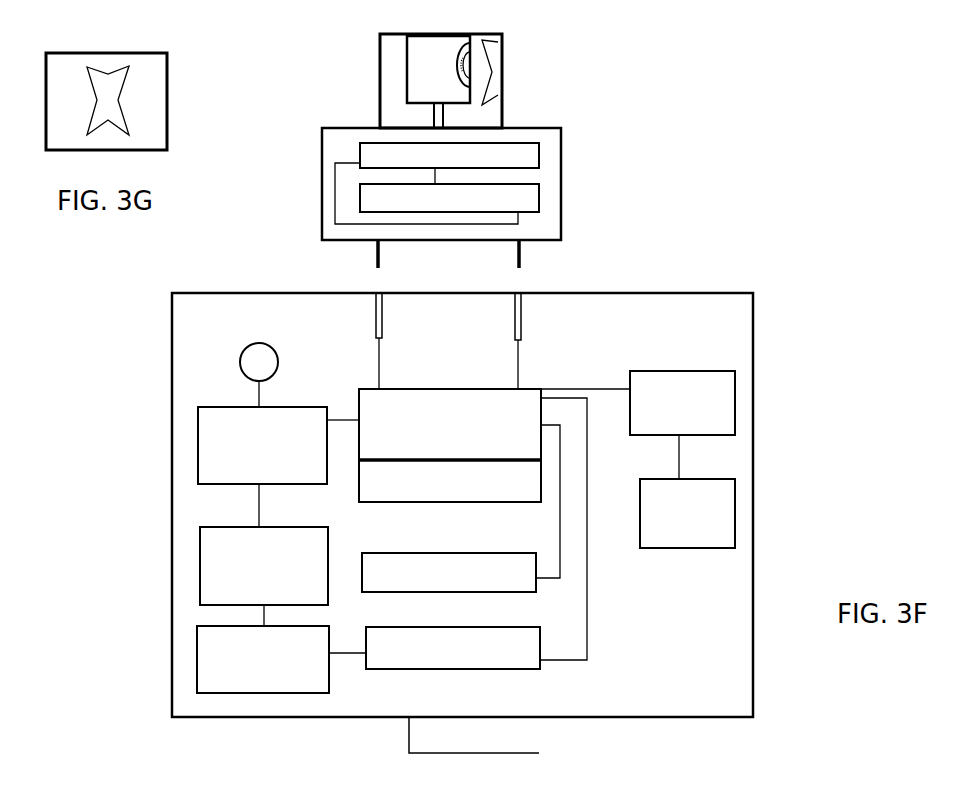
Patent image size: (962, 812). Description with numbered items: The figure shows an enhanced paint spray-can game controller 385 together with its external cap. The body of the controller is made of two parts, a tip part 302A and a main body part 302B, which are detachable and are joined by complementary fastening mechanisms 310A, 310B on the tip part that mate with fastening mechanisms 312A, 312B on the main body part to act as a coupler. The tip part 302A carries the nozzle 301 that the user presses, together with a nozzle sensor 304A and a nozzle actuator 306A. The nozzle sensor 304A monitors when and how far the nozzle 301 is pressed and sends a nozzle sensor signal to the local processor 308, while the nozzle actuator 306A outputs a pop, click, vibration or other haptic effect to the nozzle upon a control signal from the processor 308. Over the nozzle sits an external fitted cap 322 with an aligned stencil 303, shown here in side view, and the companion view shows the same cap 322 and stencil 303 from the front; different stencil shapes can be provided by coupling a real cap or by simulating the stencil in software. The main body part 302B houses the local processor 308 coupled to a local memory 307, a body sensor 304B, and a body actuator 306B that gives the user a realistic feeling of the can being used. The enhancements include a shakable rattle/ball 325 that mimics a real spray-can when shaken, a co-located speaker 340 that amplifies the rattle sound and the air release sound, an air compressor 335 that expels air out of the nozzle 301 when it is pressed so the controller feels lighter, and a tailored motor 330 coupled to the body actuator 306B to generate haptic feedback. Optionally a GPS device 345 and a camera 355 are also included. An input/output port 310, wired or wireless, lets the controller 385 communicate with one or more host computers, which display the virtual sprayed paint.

In FIG. 3F, the nozzle 301 is at (442, 53).
In FIG. 3G, the stencil 303 is at (112, 98).
In FIG. 3F, the stencil 303 is at (502, 77).
In FIG. 3G, the external fitted cap 322 is at (164, 118).
In FIG. 3F, the external fitted cap 322 is at (380, 58).
In FIG. 3F, the tip part 302A is at (561, 185).
In FIG. 3F, the nozzle actuator 306A is at (512, 150).
In FIG. 3F, the nozzle sensor 304A is at (358, 195).
In FIG. 3F, the fastening mechanism 310A is at (373, 252).
In FIG. 3F, the fastening mechanism 310B is at (522, 258).
In FIG. 3F, the main body part 302B is at (755, 330).
In FIG. 3F, the fastening mechanism 312A is at (374, 313).
In FIG. 3F, the fastening mechanism 312B is at (522, 322).
In FIG. 3F, the shakable rattle/ball 325 is at (256, 357).
In FIG. 3F, the co-located speaker 340 is at (202, 443).
In FIG. 3F, the local processor 308 is at (403, 392).
In FIG. 3F, the local memory 307 is at (380, 472).
In FIG. 3F, the GPS device 345 is at (730, 407).
In FIG. 3F, the camera 355 is at (730, 498).
In FIG. 3F, the body sensor 304B is at (402, 563).
In FIG. 3F, the air compressor 335 is at (207, 570).
In FIG. 3F, the tailored motor 330 is at (197, 666).
In FIG. 3F, the body actuator 306B is at (485, 657).
In FIG. 3F, the input/output port 310 is at (498, 750).
In FIG. 3F, the enhanced paint spray-can controller 385 is at (817, 114).